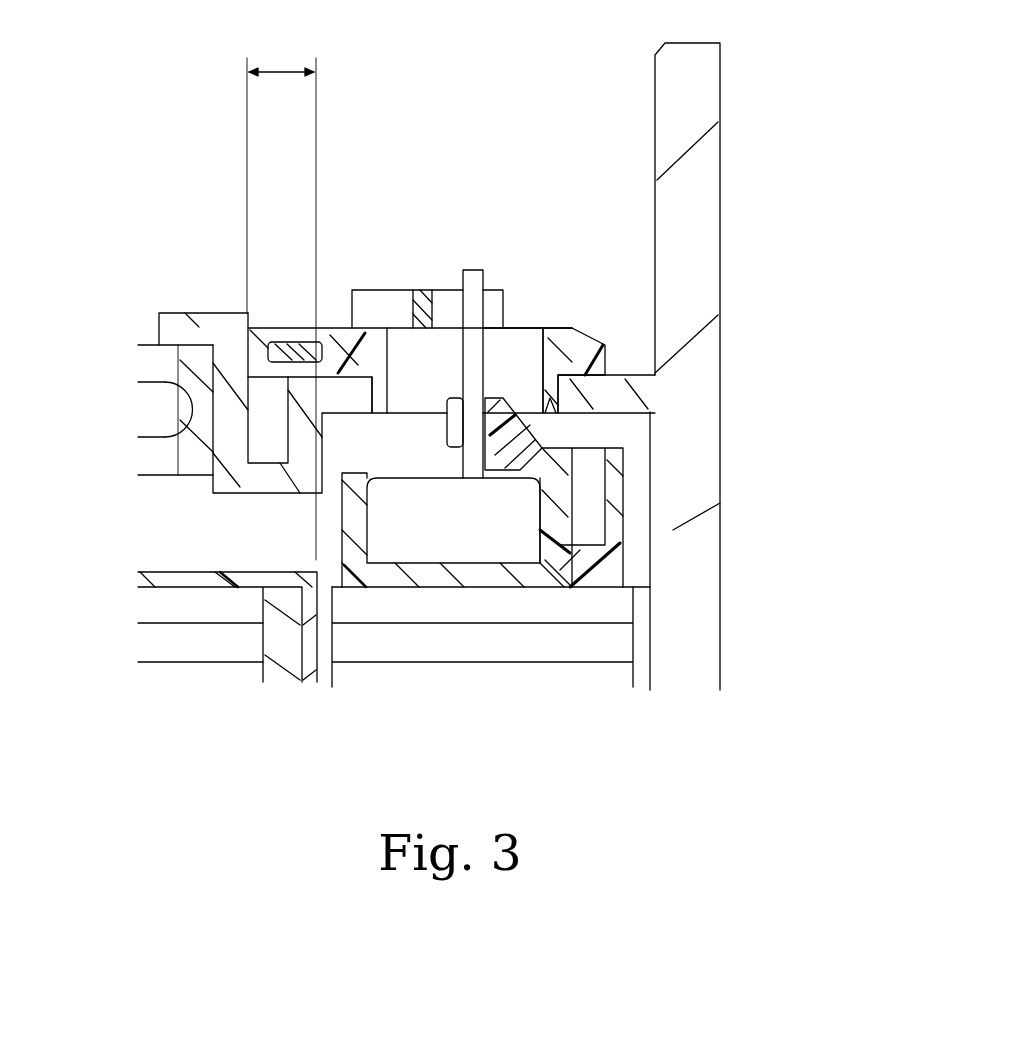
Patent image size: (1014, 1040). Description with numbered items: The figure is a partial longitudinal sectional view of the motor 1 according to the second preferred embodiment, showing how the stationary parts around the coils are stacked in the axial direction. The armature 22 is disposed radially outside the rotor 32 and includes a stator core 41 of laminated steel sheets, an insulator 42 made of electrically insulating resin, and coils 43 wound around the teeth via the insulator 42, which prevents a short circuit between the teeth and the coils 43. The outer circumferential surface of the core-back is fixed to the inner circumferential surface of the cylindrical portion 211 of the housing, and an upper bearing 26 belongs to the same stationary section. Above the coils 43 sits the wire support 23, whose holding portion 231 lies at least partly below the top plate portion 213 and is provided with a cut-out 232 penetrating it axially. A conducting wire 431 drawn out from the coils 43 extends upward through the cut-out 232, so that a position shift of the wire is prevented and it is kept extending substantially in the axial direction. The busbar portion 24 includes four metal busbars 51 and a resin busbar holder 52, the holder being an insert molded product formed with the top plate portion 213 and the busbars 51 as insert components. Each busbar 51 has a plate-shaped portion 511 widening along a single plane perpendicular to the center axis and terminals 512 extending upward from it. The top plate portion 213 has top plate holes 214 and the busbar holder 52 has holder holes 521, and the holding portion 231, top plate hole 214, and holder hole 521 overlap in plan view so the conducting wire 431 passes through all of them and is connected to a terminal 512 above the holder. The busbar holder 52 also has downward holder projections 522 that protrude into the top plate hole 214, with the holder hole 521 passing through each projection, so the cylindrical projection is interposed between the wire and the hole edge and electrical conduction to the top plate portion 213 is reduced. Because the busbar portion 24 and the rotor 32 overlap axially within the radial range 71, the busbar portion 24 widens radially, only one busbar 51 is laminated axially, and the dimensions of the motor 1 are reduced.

The motor 1 is at (453, 122).
The radial range 71 is at (281, 303).
The cylindrical portion 211 is at (685, 628).
The top plate portion 213 is at (608, 398).
The top plate hole 214 is at (556, 420).
The armature 22 is at (582, 772).
The wire support 23 is at (614, 510).
The holding portion 231 is at (447, 425).
The cut-out 232 is at (463, 450).
The busbar portion 24 is at (625, 325).
The upper bearing 26 is at (198, 378).
The rotor 32 is at (208, 548).
The stator core 41 is at (537, 640).
The insulator 42 is at (487, 572).
The coil 43 is at (445, 520).
The conducting wire 431 is at (477, 268).
The busbar 51 is at (420, 207).
The plate-shaped portion 511 is at (305, 325).
The terminal 512 is at (427, 290).
The busbar holder 52 is at (568, 356).
The holder hole 521 is at (522, 386).
The holder projection 522 is at (378, 402).